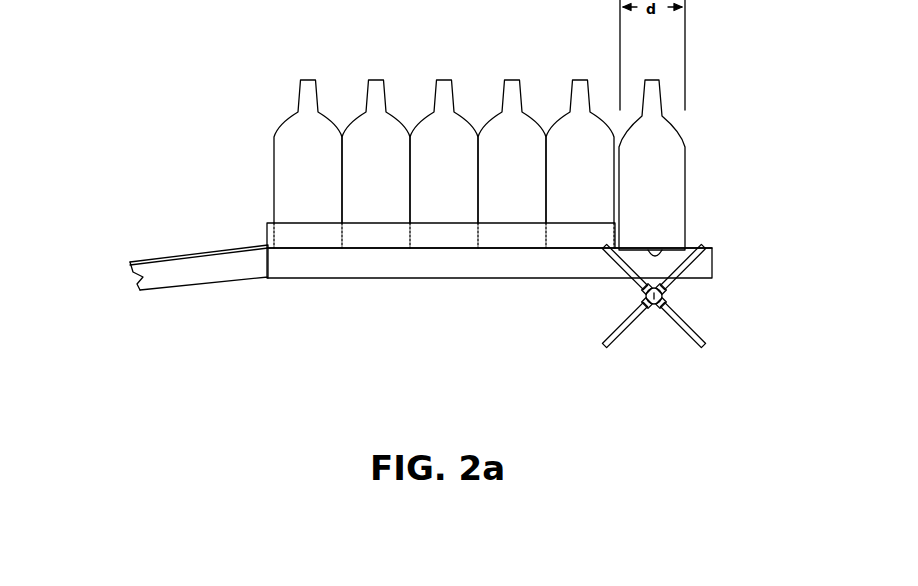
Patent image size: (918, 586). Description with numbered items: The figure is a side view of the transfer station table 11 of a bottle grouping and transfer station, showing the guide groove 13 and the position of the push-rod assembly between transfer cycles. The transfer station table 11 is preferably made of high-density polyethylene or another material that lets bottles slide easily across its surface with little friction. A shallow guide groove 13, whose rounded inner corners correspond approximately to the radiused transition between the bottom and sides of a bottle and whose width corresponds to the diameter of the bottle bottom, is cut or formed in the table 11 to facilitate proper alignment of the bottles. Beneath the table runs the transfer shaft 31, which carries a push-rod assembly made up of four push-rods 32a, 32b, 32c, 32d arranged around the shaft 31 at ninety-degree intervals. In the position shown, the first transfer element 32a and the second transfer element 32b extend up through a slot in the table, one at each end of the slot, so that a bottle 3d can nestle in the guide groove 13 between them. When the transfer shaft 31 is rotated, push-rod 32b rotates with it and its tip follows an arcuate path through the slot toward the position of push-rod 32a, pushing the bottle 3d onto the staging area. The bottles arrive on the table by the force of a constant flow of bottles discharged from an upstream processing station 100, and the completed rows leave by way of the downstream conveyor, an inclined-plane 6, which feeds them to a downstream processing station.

The bottle 3d is at (665, 192).
The inclined-plane 6 is at (138, 278).
The transfer station table 11 is at (410, 262).
The guide groove 13 is at (683, 245).
The transfer shaft 31 is at (660, 308).
The first transfer element 32a is at (596, 282).
The second transfer element 32b is at (715, 277).
The push-rod 32c is at (718, 323).
The push-rod 32d is at (596, 330).
The upstream processing station 100 is at (684, 392).